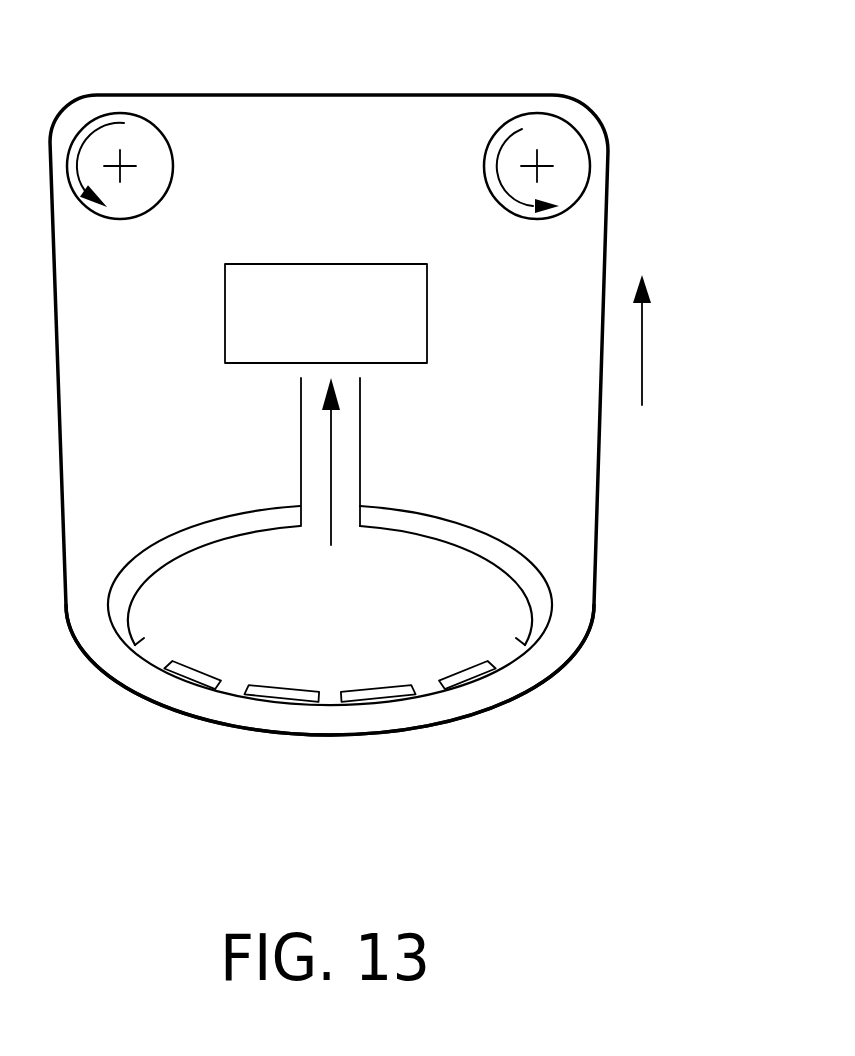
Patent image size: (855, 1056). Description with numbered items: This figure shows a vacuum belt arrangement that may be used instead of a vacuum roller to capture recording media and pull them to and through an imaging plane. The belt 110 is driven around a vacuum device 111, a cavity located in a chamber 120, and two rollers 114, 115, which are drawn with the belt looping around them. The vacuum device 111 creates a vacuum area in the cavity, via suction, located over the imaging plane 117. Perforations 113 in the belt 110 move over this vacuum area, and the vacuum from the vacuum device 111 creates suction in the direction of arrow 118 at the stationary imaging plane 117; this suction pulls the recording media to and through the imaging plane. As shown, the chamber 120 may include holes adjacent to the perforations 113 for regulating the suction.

The belt 110 is at (620, 232).
The vacuum device 111 is at (413, 312).
The perforations 113 is at (423, 697).
The roller 114 is at (92, 147).
The roller 115 is at (548, 152).
The imaging plane 117 is at (460, 723).
The arrow 118 is at (332, 458).
The chamber 120 is at (498, 598).